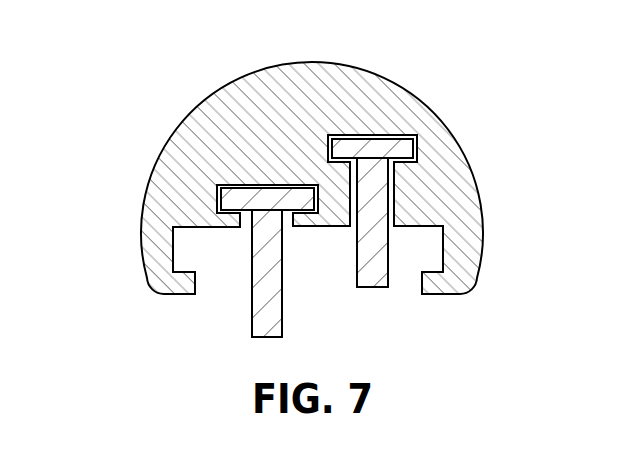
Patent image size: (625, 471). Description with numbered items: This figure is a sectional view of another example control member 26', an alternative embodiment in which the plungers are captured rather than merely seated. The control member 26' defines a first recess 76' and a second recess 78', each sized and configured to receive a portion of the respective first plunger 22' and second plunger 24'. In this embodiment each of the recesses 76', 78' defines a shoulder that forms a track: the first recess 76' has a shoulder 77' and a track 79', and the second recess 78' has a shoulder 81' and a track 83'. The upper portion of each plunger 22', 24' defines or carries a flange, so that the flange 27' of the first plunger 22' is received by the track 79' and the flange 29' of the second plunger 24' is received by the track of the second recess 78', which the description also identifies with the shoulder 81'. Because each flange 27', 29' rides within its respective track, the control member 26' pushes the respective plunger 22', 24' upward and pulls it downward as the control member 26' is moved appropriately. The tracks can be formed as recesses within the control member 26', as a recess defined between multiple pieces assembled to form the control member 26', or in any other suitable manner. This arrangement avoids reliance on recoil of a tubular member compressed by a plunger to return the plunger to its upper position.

The control member 26' is at (270, 178).
The first plunger 22' is at (227, 269).
The second plunger 24' is at (375, 250).
The first recess 76' is at (247, 127).
The second recess 78' is at (391, 101).
The flange 27' is at (267, 111).
The flange 29' is at (372, 93).
The shoulder 77' is at (157, 242).
The track 79' is at (321, 270).
The shoulder 81' is at (471, 217).
The track 83' is at (467, 157).